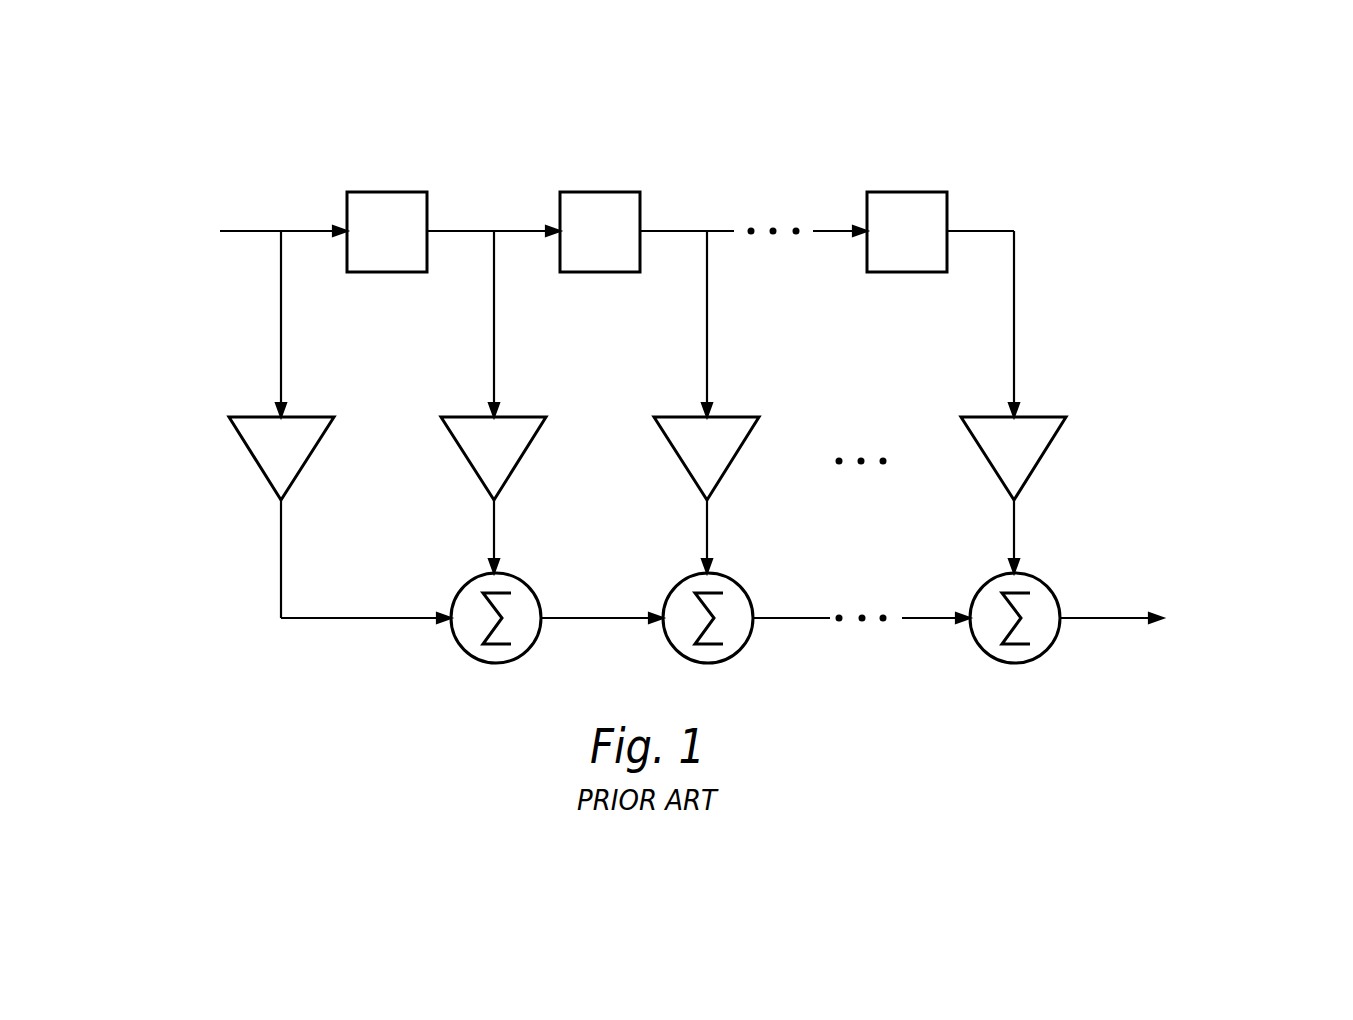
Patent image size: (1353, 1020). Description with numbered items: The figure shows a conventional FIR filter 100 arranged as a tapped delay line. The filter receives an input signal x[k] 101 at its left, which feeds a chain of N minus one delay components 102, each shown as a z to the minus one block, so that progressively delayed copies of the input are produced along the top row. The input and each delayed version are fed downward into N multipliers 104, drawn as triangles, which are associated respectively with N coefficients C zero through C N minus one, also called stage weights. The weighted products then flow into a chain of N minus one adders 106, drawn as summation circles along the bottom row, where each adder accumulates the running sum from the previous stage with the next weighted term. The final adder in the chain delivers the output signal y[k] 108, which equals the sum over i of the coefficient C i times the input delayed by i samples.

The FIR filter 100 is at (238, 76).
The input signal x[k] 101 is at (160, 200).
The delay components 102 is at (380, 192).
The multipliers 104 is at (307, 415).
The adders 106 is at (526, 583).
The output signal y[k] 108 is at (1237, 585).